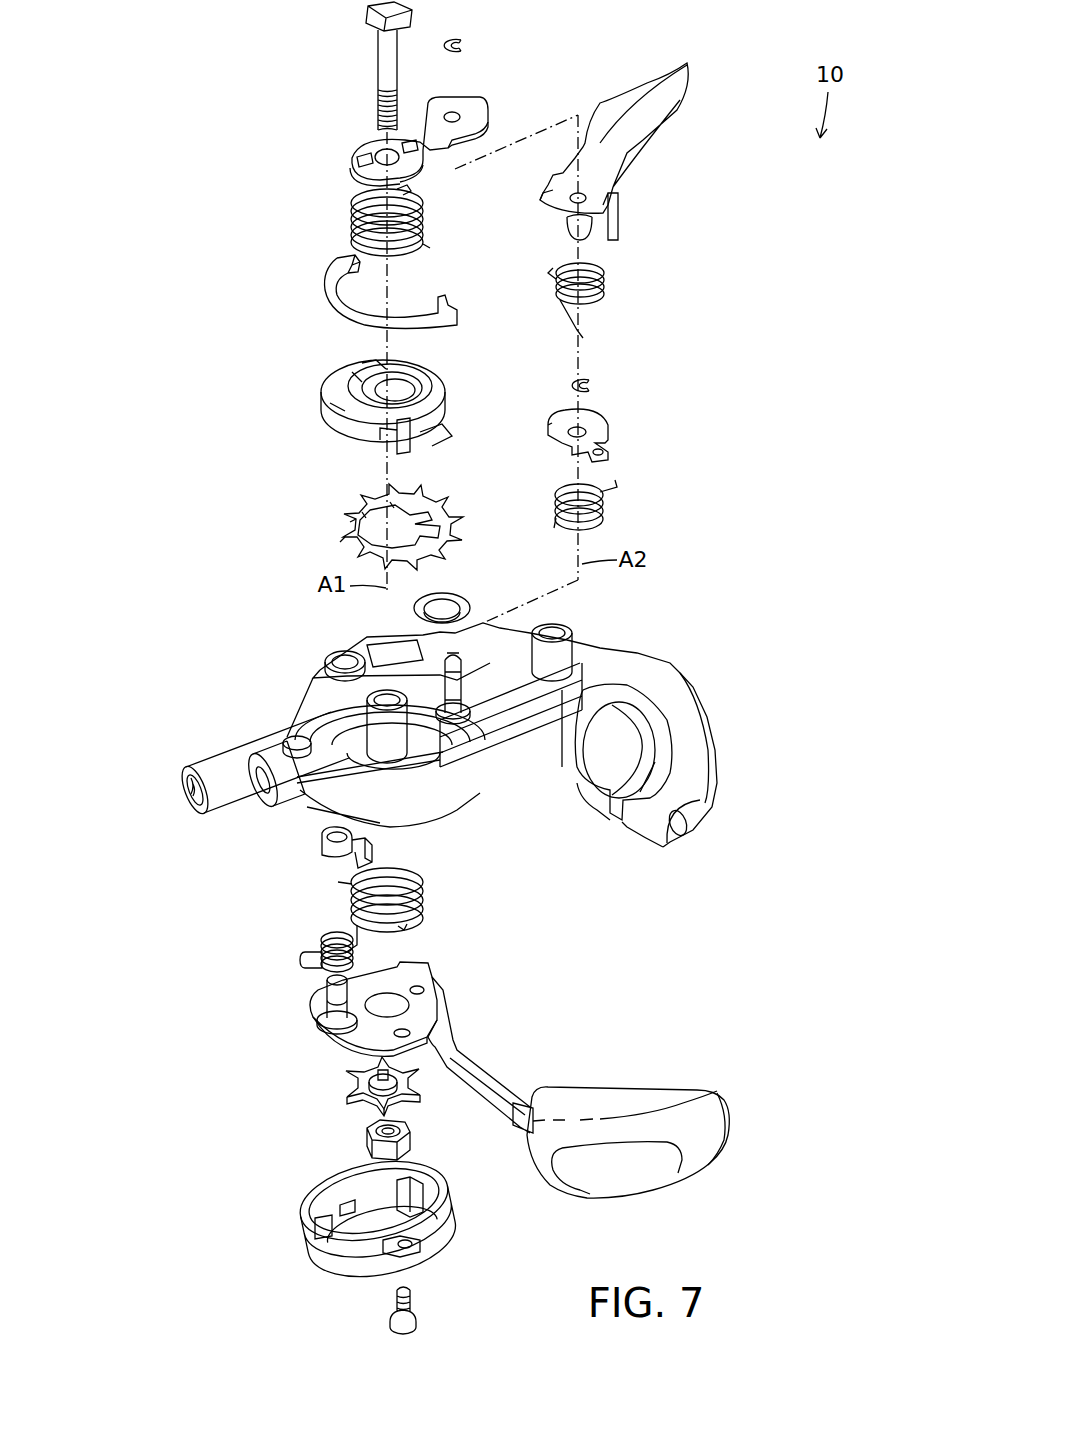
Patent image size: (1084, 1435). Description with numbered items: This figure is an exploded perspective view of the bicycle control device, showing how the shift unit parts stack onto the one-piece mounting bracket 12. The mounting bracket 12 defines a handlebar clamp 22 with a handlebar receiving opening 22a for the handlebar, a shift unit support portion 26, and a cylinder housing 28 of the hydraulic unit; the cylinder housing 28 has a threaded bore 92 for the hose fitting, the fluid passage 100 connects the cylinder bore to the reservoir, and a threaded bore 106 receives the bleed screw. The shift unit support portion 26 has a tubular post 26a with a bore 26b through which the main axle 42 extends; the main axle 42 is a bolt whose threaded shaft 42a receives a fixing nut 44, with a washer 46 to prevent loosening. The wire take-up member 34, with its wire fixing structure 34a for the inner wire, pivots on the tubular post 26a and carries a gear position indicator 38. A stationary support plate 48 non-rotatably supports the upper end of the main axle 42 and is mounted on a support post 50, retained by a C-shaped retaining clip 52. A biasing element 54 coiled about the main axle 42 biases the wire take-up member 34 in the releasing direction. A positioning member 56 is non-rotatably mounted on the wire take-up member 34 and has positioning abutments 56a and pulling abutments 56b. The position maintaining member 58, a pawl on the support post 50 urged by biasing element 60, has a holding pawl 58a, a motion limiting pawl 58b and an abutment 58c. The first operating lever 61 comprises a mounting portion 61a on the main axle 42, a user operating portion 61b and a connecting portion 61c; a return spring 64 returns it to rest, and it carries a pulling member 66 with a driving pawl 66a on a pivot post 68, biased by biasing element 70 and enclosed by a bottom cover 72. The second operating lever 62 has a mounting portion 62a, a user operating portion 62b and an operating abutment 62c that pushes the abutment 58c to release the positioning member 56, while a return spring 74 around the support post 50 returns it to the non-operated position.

The mounting bracket 12 is at (452, 720).
The handlebar clamp 22 is at (669, 743).
The handlebar receiving opening 22a is at (633, 737).
The shift unit support portion 26 is at (427, 800).
The tubular post 26a is at (312, 735).
The bore 26b is at (377, 694).
The cylinder housing 28 is at (241, 764).
The wire take-up member 34 is at (376, 416).
The wire fixing structure 34a is at (407, 440).
The gear position indicator 38 is at (320, 267).
The main axle 42 is at (358, 66).
The shaft 42a is at (378, 110).
The fixing nut 44 is at (367, 1132).
The washer 46 is at (342, 1090).
The stationary support plate 48 is at (478, 107).
The support post 50 is at (467, 690).
The C-shaped retaining clip 52 is at (465, 47).
The biasing element 54 is at (352, 203).
The positioning member 56 is at (396, 527).
The positioning abutments 56a is at (453, 553).
The pulling abutments 56b is at (348, 538).
The position maintaining member 58 is at (583, 428).
The holding pawl 58a is at (552, 423).
The motion limiting pawl 58b is at (570, 449).
The abutment 58c is at (608, 443).
The biasing element 60 is at (567, 490).
The first operating lever 61 is at (553, 1088).
The mounting portion 61a is at (417, 968).
The user operating portion 61b is at (620, 1173).
The connecting portion 61c is at (487, 1060).
The second operating lever 62 is at (652, 134).
The mounting portion 62a is at (623, 170).
The user operating portion 62b is at (655, 76).
The operating abutment 62c is at (618, 228).
The return spring 64 is at (422, 876).
The pulling member 66 is at (362, 854).
The driving pawl 66a is at (372, 847).
The pivot post 68 is at (327, 983).
The biasing element 70 is at (330, 942).
The bottom cover 72 is at (333, 1270).
The return spring 74 is at (600, 272).
The threaded bore 92 is at (186, 795).
The fluid passage 100 is at (335, 653).
The threaded bore 106 is at (550, 638).